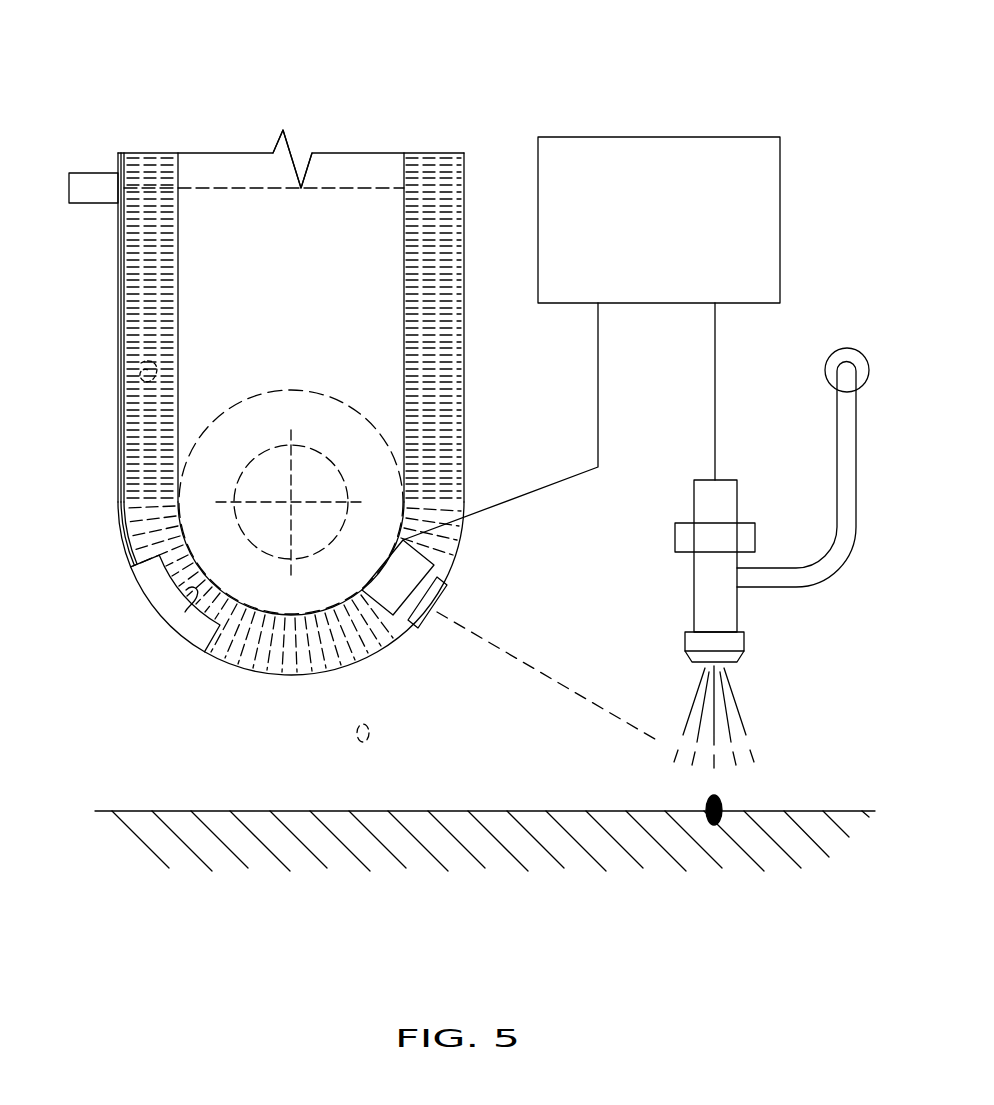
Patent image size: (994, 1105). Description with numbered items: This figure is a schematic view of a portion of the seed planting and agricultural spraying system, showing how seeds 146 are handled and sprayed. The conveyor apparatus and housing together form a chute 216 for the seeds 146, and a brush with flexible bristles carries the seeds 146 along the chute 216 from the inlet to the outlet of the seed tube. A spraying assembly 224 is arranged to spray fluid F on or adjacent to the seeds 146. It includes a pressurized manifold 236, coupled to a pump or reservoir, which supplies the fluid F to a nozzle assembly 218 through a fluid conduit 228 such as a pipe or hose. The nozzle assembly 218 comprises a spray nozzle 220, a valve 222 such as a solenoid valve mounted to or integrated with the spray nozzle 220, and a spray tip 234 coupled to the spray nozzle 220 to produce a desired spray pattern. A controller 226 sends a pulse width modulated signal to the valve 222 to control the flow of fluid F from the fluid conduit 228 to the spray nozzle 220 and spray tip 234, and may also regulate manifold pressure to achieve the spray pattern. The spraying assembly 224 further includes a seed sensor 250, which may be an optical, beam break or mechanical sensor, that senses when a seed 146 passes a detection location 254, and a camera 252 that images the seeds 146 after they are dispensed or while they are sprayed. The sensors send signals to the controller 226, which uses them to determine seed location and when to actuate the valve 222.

The seeds 146 is at (138, 368).
The chute 216 is at (105, 307).
The nozzle assembly 218 is at (709, 531).
The spray nozzle 220 is at (694, 565).
The valve 222 is at (737, 490).
The spraying assembly 224 is at (800, 117).
The controller 226 is at (684, 229).
The fluid conduit 228 is at (857, 425).
The spray tip 234 is at (685, 641).
The manifold 236 is at (865, 365).
The seed sensor 250 is at (98, 173).
The camera 252 is at (430, 562).
The detection location 254 is at (244, 187).
The fluid F is at (740, 705).